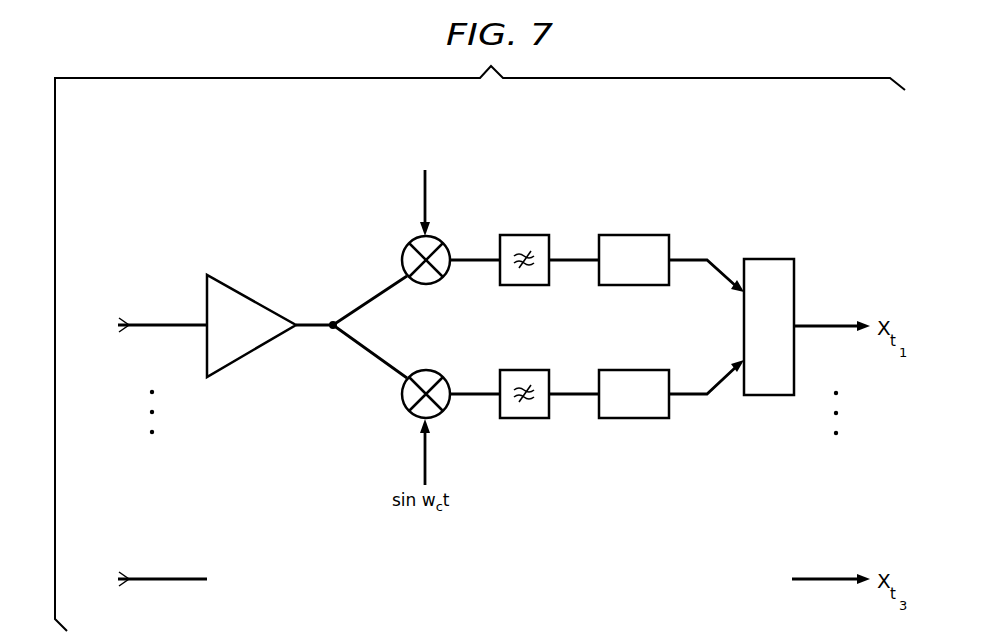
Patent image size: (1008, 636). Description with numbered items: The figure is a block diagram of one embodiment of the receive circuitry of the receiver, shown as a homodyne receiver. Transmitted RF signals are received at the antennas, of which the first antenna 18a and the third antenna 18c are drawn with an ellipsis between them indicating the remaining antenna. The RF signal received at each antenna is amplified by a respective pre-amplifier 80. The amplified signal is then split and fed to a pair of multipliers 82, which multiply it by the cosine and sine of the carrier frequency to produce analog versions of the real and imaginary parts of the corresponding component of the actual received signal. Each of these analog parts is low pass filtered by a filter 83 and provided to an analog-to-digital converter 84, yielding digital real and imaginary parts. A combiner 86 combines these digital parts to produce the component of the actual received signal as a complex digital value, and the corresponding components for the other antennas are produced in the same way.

The antenna 18a is at (126, 322).
The antenna 18c is at (126, 576).
The pre-amplifier 80 is at (256, 257).
The multiplier 82 is at (375, 132).
The filter 83 is at (532, 204).
The analog-to-digital converter 84 is at (641, 204).
The combiner 86 is at (773, 258).